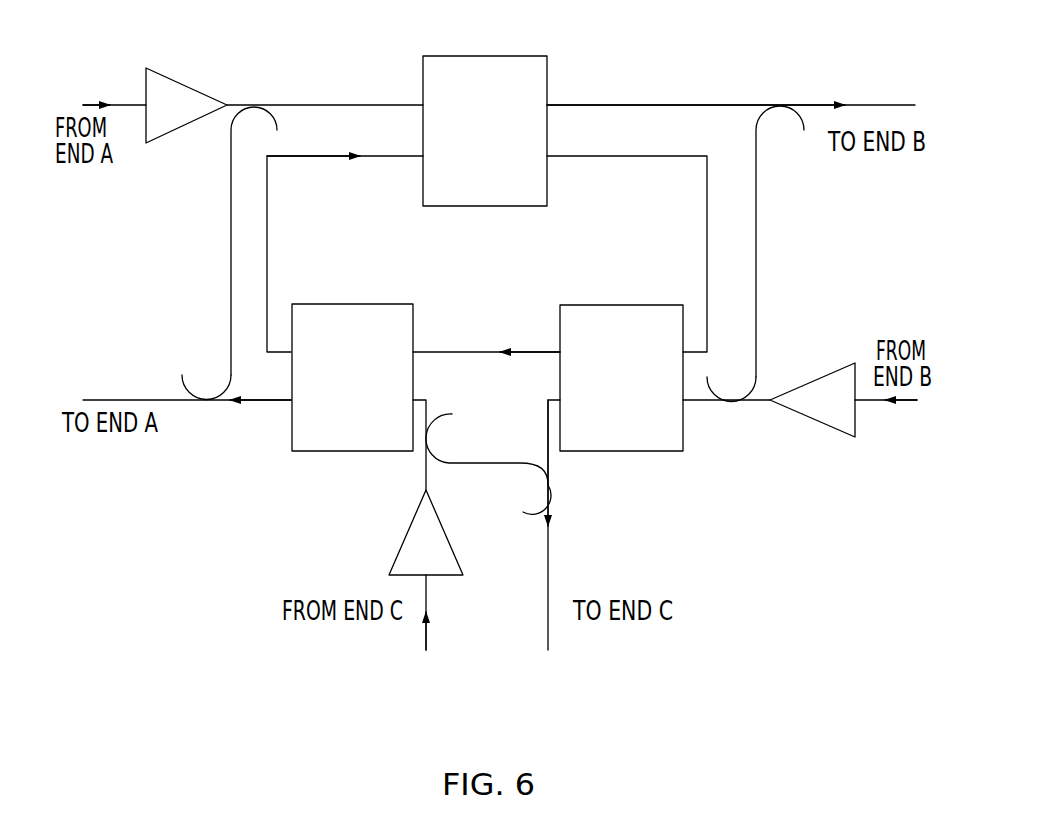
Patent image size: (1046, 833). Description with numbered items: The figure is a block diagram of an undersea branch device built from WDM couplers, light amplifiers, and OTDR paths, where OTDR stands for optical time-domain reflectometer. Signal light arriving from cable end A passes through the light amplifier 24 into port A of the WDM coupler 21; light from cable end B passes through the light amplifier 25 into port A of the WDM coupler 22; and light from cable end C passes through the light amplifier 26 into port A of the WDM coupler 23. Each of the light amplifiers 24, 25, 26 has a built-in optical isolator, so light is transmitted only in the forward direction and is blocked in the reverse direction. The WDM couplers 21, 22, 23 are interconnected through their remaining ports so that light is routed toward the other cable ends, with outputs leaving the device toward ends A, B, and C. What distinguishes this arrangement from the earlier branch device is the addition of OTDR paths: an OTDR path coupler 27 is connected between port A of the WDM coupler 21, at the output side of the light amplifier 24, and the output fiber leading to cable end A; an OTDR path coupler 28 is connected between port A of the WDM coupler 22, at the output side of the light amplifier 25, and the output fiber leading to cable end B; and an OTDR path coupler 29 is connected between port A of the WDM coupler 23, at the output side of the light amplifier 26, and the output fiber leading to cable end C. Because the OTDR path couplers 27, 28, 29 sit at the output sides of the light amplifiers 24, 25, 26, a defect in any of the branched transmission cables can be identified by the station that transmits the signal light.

The WDM coupler 21 is at (484, 56).
The WDM coupler 22 is at (607, 305).
The WDM coupler 23 is at (340, 304).
The light amplifier 24 is at (185, 86).
The light amplifier 25 is at (808, 418).
The light amplifier 26 is at (408, 530).
The OTDR path coupler 27 is at (231, 262).
The OTDR path coupler 28 is at (756, 258).
The OTDR path coupler 29 is at (480, 463).